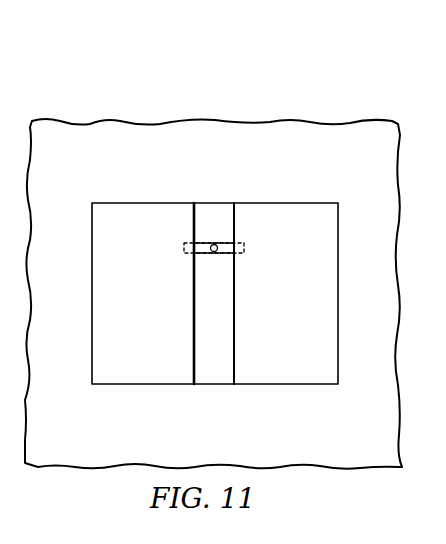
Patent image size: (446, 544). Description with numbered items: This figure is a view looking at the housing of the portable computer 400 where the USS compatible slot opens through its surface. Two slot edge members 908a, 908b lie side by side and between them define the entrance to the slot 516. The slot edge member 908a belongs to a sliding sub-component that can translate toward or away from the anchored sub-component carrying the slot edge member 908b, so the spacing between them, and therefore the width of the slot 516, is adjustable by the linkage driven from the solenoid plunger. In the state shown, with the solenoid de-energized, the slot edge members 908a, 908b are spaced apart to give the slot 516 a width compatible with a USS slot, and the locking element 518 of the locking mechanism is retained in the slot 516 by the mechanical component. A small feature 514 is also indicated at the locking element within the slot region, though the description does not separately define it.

The portable computer 400 is at (98, 123).
The contact point 514 is at (212, 247).
The slot 516 is at (213, 375).
The locking element 518 is at (223, 257).
The slot edge member 908a is at (132, 373).
The slot edge member 908b is at (293, 375).